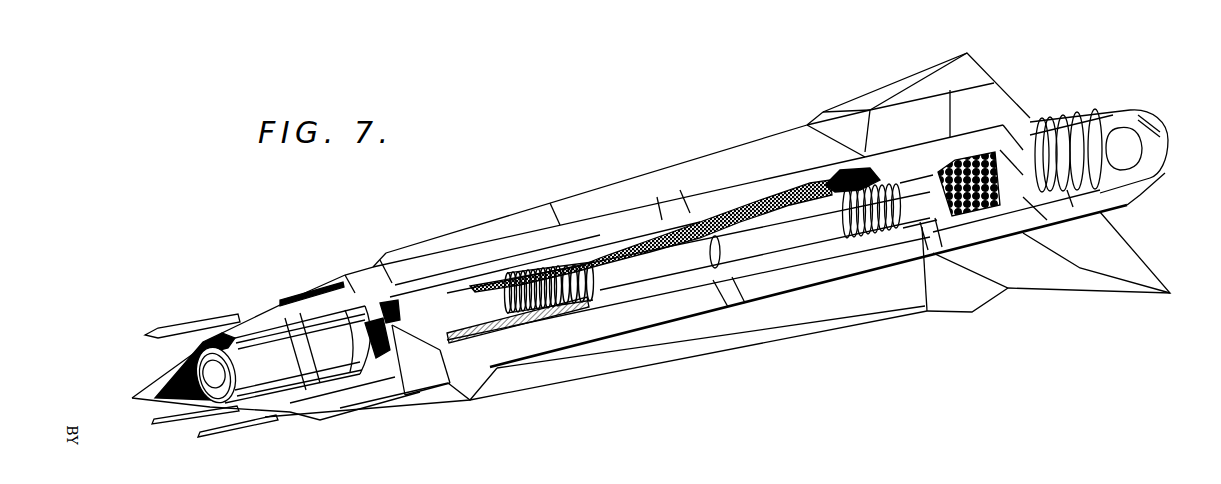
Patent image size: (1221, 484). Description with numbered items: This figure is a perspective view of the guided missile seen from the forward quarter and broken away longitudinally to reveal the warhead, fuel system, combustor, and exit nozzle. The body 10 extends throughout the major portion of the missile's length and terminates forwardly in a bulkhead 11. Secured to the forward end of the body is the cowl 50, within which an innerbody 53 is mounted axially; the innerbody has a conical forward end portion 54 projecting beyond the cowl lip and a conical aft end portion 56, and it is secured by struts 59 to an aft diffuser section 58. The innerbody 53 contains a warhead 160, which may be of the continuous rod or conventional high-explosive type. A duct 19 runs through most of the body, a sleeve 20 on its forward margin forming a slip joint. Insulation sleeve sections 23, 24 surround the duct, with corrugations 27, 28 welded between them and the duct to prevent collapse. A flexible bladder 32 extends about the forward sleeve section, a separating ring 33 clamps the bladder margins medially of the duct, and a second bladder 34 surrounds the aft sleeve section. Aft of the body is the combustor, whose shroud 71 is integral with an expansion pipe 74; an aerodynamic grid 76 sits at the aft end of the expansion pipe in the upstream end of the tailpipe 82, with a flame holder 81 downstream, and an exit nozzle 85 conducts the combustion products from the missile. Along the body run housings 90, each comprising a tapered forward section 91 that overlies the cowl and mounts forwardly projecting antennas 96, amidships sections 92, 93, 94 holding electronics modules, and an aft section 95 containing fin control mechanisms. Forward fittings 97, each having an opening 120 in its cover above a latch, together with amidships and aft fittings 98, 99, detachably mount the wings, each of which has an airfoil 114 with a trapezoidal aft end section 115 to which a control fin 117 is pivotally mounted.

The body 10 is at (769, 190).
The bulkhead 11 is at (385, 298).
The duct 19 is at (447, 297).
The sleeve 20 is at (448, 350).
The insulation sleeve section 23 is at (635, 277).
The insulation sleeve section 24 is at (779, 245).
The corrugations 27 is at (543, 317).
The corrugations 28 is at (858, 215).
The flexible bladder 32 is at (630, 243).
The separating ring 33 is at (720, 252).
The bladder 34 is at (732, 220).
The cowl 50 is at (235, 325).
The innerbody 53 is at (282, 318).
The conical forward end portion 54 is at (150, 395).
The conical aft end portion 56 is at (437, 347).
The aft diffuser section 58 is at (352, 293).
The struts 59 is at (353, 337).
The shroud 71 is at (1162, 162).
The expansion pipe 74 is at (943, 218).
The aerodynamic grid 76 is at (987, 150).
The flame holder 81 is at (1068, 207).
The tailpipe 82 is at (1030, 135).
The exit nozzle 85 is at (1140, 118).
The housings 90 is at (360, 413).
The tapered forward section 91 is at (397, 407).
The amidships section 92 is at (515, 242).
The amidships section 93 is at (582, 225).
The amidships section 94 is at (853, 265).
The aft section 95 is at (1068, 113).
The antennas 96 is at (170, 330).
The forward fittings 97 is at (443, 373).
The amidships fittings 98 is at (726, 297).
The aft fittings 99 is at (924, 243).
The airfoil 114 is at (613, 178).
The trapezoidal aft end section 115 is at (993, 102).
The control fin 117 is at (968, 63).
The opening 120 is at (470, 400).
The warhead 160 is at (325, 377).